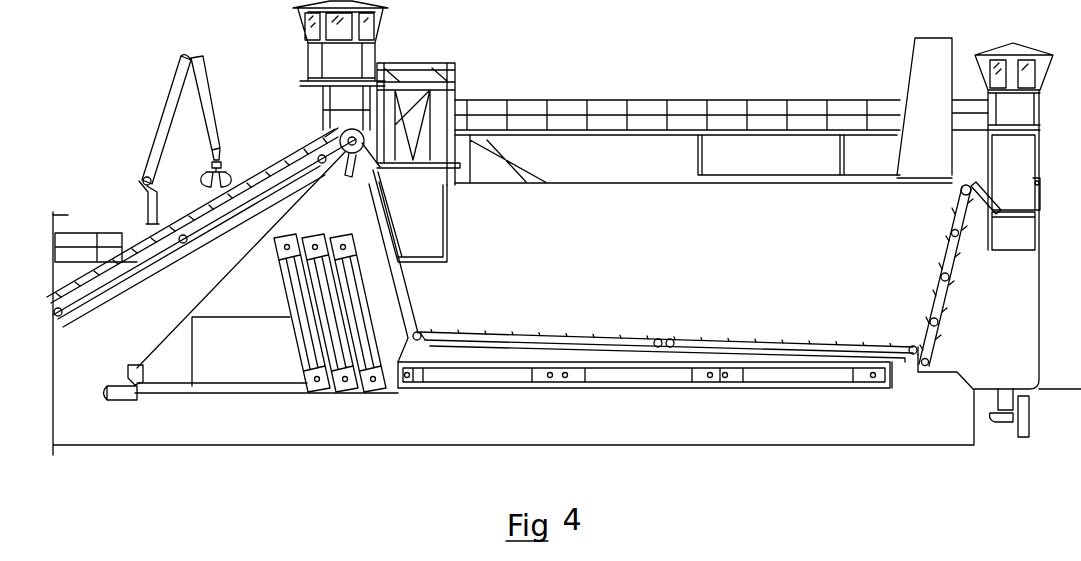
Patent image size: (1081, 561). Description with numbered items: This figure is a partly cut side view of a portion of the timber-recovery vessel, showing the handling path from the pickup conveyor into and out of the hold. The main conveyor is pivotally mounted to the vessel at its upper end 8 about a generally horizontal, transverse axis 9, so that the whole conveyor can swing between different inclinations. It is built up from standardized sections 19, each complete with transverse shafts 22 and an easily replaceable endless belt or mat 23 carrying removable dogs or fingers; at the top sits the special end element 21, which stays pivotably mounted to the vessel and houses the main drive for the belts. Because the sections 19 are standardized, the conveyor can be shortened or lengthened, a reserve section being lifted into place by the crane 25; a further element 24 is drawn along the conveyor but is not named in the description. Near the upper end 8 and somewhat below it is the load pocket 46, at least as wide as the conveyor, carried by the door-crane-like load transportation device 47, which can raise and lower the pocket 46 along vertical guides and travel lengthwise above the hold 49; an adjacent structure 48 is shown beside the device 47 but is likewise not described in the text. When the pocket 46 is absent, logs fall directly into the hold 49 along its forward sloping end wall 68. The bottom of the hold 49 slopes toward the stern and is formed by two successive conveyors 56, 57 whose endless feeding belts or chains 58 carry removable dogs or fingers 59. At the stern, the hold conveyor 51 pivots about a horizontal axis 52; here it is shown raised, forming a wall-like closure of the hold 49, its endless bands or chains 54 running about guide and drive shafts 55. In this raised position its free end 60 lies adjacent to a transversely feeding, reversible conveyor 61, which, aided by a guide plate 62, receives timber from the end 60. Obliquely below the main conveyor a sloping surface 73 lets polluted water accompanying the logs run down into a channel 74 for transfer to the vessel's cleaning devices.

The upper end of the conveyor 8 is at (349, 134).
The pivot axis 9 is at (350, 177).
The conveyor sections 19 is at (128, 292).
The end element 21 is at (325, 138).
The shafts 22 is at (188, 244).
The belt or mat 23 is at (160, 263).
The inclined conveyor 24 is at (301, 192).
The crane 25 is at (170, 118).
The load pocket 46 is at (447, 220).
The load transportation device 47 is at (462, 85).
The bridge railing 48 is at (455, 104).
The hold 49 is at (663, 210).
The conveyor 51 is at (955, 300).
The horizontal axis 52 is at (926, 367).
The bands or chains 54 is at (945, 315).
The guide and drive shafts 55 is at (950, 234).
The bottom conveyor 56 is at (597, 334).
The bottom conveyor 57 is at (815, 345).
The feeding belts or chains 58 is at (515, 334).
The dogs or fingers 59 is at (473, 332).
The free end of the conveyor 60 is at (958, 193).
The transverse conveyor 61 is at (1015, 232).
The guide plate 62 is at (990, 198).
The forward sloping end wall 68 is at (401, 291).
The sloping surface 73 is at (228, 283).
The channel 74 is at (127, 370).